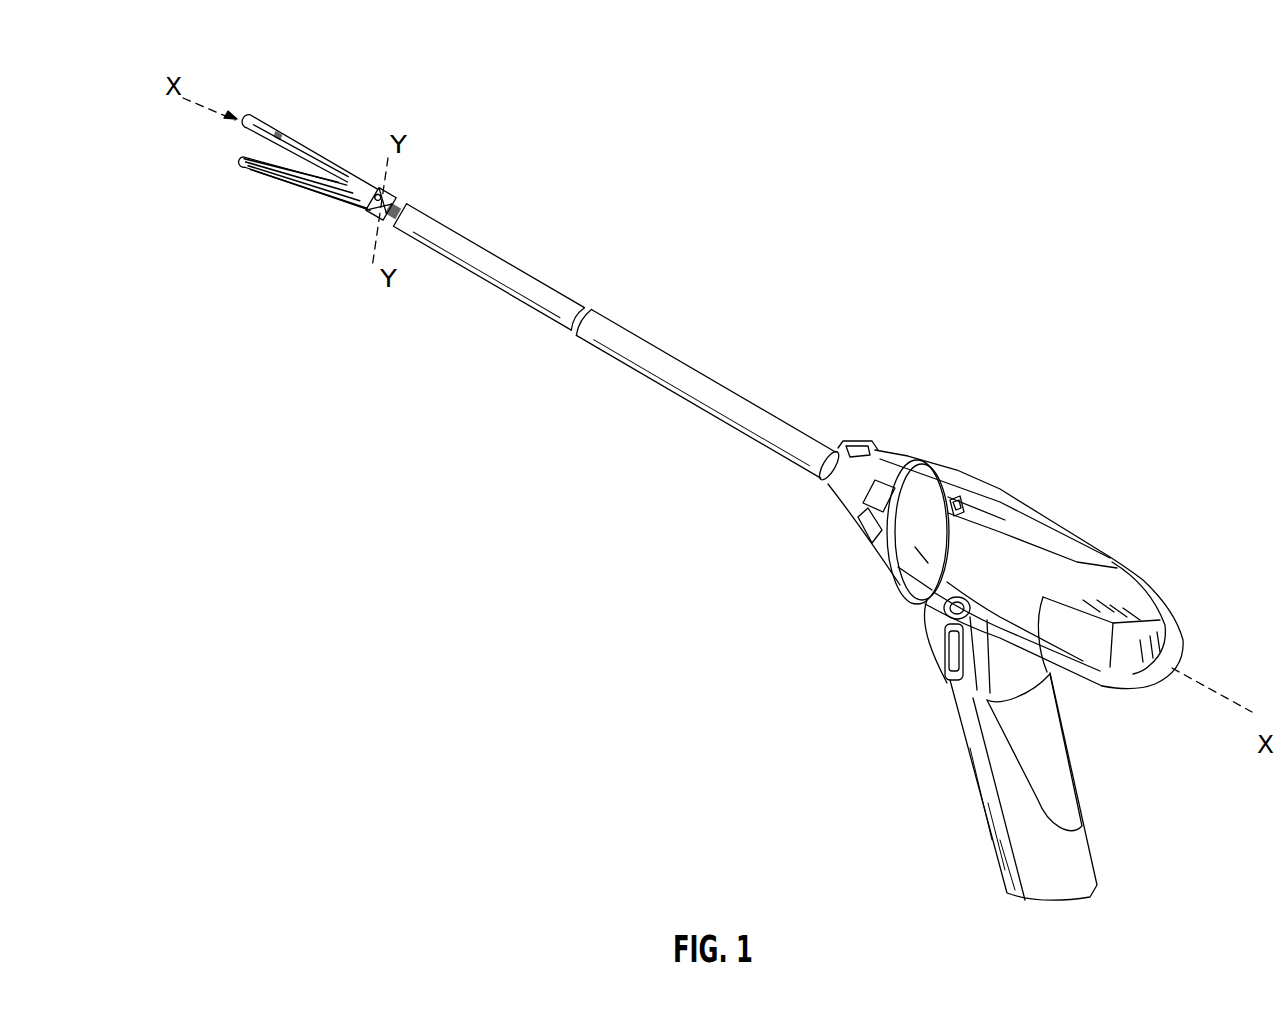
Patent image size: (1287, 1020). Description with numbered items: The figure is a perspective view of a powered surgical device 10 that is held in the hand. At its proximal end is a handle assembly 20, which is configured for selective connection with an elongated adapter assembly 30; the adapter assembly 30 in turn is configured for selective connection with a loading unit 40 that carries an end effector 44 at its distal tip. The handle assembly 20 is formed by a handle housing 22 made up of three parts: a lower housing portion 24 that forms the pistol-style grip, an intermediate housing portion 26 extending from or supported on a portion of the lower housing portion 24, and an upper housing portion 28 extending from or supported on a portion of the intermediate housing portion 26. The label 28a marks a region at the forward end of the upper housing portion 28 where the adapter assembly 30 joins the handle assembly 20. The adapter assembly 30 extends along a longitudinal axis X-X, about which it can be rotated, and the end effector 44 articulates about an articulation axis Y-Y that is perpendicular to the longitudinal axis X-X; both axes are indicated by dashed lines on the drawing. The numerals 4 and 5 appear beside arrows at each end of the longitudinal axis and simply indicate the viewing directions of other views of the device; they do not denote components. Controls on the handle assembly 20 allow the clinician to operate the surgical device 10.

The powered surgical device 10 is at (902, 290).
The handle assembly 20 is at (1037, 514).
The handle housing 22 is at (1170, 623).
The lower housing portion 24 is at (985, 782).
The intermediate housing portion 26 is at (1117, 573).
The upper housing portion 28 is at (962, 486).
The rotation knob 28a is at (907, 463).
The adapter assembly 30 is at (670, 364).
The loading unit 40 is at (513, 273).
The end effector 44 is at (334, 164).
The section line 4 is at (226, 128).
The section line 5 is at (237, 108).